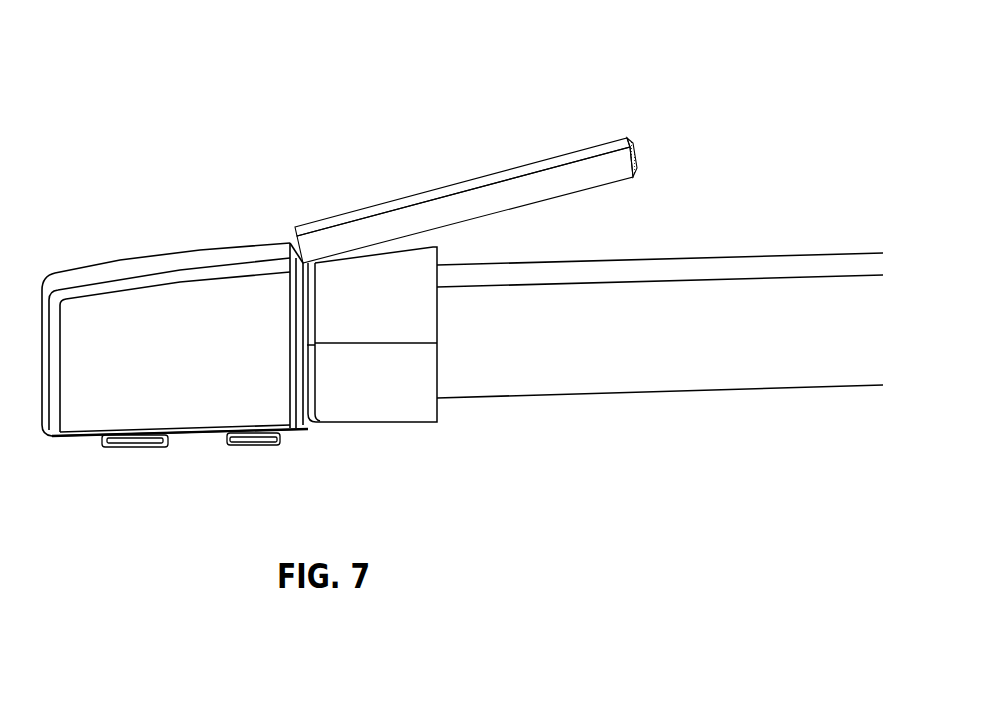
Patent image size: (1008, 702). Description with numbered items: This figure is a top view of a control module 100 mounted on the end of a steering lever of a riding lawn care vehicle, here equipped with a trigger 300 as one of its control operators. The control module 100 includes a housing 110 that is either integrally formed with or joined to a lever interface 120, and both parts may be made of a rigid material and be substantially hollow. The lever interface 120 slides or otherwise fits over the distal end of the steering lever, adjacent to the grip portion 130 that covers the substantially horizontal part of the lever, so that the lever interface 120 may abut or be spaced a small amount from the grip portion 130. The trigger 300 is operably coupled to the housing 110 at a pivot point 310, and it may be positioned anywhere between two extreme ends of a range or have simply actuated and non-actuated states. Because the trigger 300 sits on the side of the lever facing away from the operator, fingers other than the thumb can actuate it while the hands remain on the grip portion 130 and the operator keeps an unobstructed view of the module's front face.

The control module 100 is at (140, 160).
The housing 110 is at (147, 263).
The lever interface 120 is at (370, 392).
The grip portion 130 is at (790, 330).
The trigger 300 is at (555, 157).
The pivot point 310 is at (292, 242).